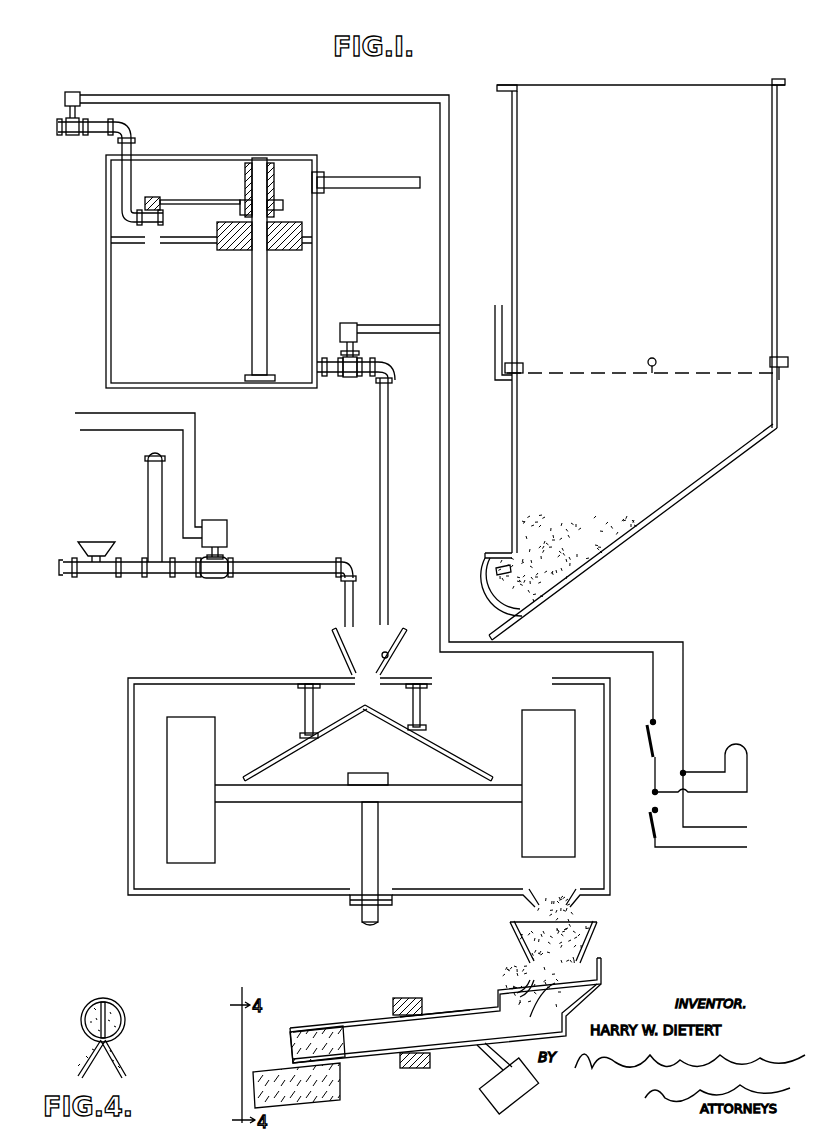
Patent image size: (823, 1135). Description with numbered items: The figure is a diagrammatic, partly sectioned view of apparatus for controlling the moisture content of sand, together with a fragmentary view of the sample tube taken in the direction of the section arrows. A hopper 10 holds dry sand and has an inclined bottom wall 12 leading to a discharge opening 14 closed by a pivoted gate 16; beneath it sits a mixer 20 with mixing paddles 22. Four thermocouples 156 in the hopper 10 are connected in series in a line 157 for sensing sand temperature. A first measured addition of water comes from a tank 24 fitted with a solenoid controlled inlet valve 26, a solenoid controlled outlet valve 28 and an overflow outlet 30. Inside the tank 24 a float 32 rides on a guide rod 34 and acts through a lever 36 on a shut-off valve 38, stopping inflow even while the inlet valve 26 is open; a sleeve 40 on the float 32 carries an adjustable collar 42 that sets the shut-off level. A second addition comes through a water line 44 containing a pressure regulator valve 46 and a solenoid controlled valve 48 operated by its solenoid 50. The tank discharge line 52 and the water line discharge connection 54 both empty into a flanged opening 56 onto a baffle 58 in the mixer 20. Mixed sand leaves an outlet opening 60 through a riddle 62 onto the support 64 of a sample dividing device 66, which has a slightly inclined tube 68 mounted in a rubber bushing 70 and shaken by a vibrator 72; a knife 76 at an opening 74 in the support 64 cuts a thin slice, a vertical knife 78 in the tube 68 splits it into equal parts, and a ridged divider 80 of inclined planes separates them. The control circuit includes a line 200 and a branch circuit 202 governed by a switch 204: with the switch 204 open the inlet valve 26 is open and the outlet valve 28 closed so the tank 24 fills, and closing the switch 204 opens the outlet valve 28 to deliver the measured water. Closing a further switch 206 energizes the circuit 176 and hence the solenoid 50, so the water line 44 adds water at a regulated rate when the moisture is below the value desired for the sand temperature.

In FIG. 1, the hopper 10 is at (512, 182).
In FIG. 1, the inclined bottom wall 12 is at (695, 488).
In FIG. 1, the discharge opening 14 is at (498, 568).
In FIG. 1, the pivoted gate 16 is at (496, 592).
In FIG. 1, the mixer 20 is at (128, 790).
In FIG. 1, the mixing paddles 22 is at (185, 825).
In FIG. 1, the tank 24 is at (106, 310).
In FIG. 1, the solenoid controlled inlet valve 26 is at (72, 134).
In FIG. 1, the solenoid controlled outlet valve 28 is at (356, 378).
In FIG. 1, the overflow outlet 30 is at (370, 189).
In FIG. 1, the float 32 is at (240, 251).
In FIG. 1, the guide rod 34 is at (267, 303).
In FIG. 1, the lever 36 is at (205, 199).
In FIG. 1, the shut-off valve 38 is at (150, 226).
In FIG. 1, the sleeve 40 is at (274, 185).
In FIG. 1, the adjustable collar 42 is at (240, 208).
In FIG. 1, the water line 44 is at (268, 574).
In FIG. 1, the pressure regulator valve 46 is at (90, 576).
In FIG. 1, the solenoid controlled valve 48 is at (214, 578).
In FIG. 1, the solenoid 50 is at (228, 528).
In FIG. 1, the discharge line 52 is at (389, 548).
In FIG. 1, the discharge connection 54 is at (344, 600).
In FIG. 1, the flanged opening 56 is at (392, 656).
In FIG. 1, the baffle 58 is at (290, 755).
In FIG. 1, the outlet opening 60 is at (576, 903).
In FIG. 1, the riddle 62 is at (594, 940).
In FIG. 1, the support 64 is at (603, 963).
In FIG. 1, the sample dividing device 66 is at (460, 1006).
In FIG. 1, the tube 68 is at (450, 1060).
In FIG. 4, the tube 68 is at (81, 1022).
In FIG. 1, the rubber bushing 70 is at (395, 1003).
In FIG. 1, the vibrator 72 is at (492, 1105).
In FIG. 1, the opening 74 is at (537, 1012).
In FIG. 1, the knife 76 is at (524, 990).
In FIG. 1, the vertical knife 78 is at (340, 1025).
In FIG. 4, the vertical knife 78 is at (106, 1012).
In FIG. 1, the ridged divider 80 is at (312, 1093).
In FIG. 4, the ridged divider 80 is at (120, 1058).
In FIG. 1, the thermocouples 156 is at (523, 364).
In FIG. 1, the line 157 is at (495, 346).
In FIG. 1, the circuit 176 is at (95, 413).
In FIG. 1, the line 200 is at (735, 750).
In FIG. 1, the branch circuit 202 is at (615, 641).
In FIG. 1, the switch 204 is at (655, 732).
In FIG. 1, the switch 206 is at (650, 825).